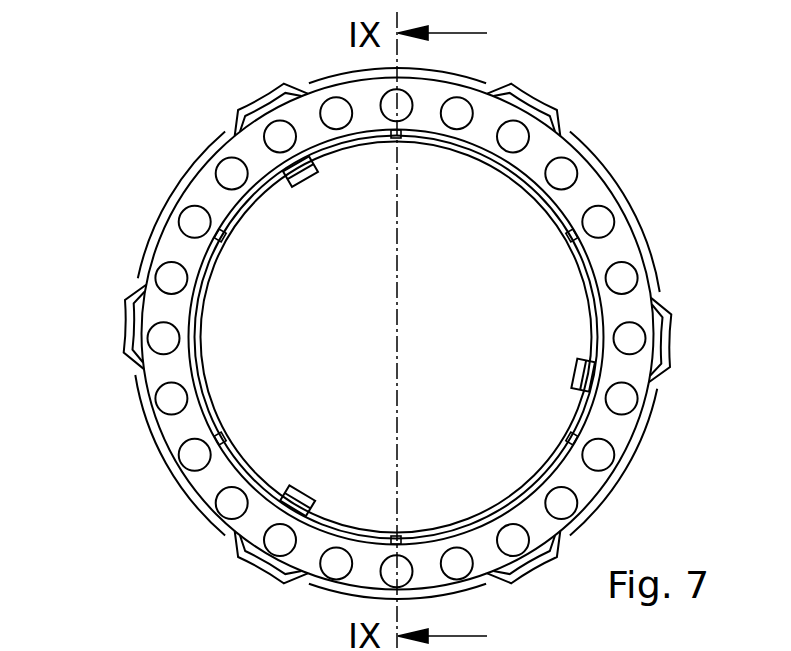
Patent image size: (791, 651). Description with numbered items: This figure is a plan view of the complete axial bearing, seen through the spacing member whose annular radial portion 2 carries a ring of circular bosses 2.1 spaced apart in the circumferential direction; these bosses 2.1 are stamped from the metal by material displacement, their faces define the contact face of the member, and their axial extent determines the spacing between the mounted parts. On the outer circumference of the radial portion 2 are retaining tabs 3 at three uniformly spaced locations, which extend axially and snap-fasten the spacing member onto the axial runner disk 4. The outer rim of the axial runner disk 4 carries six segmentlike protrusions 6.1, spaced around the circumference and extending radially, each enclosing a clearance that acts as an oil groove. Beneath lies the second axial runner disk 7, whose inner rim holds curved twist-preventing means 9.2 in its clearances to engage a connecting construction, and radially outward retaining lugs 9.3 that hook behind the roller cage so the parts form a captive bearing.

The annular radial portion 2 is at (431, 338).
The bosses 2.1 is at (565, 170).
The retaining tabs 3 is at (320, 80).
The axial runner disk 4 is at (617, 200).
The segmentlike protrusions 6.1 is at (258, 102).
The second axial runner disk 7 is at (427, 533).
The twist-preventing means 9.2 is at (302, 180).
The retaining lugs 9.3 is at (394, 138).